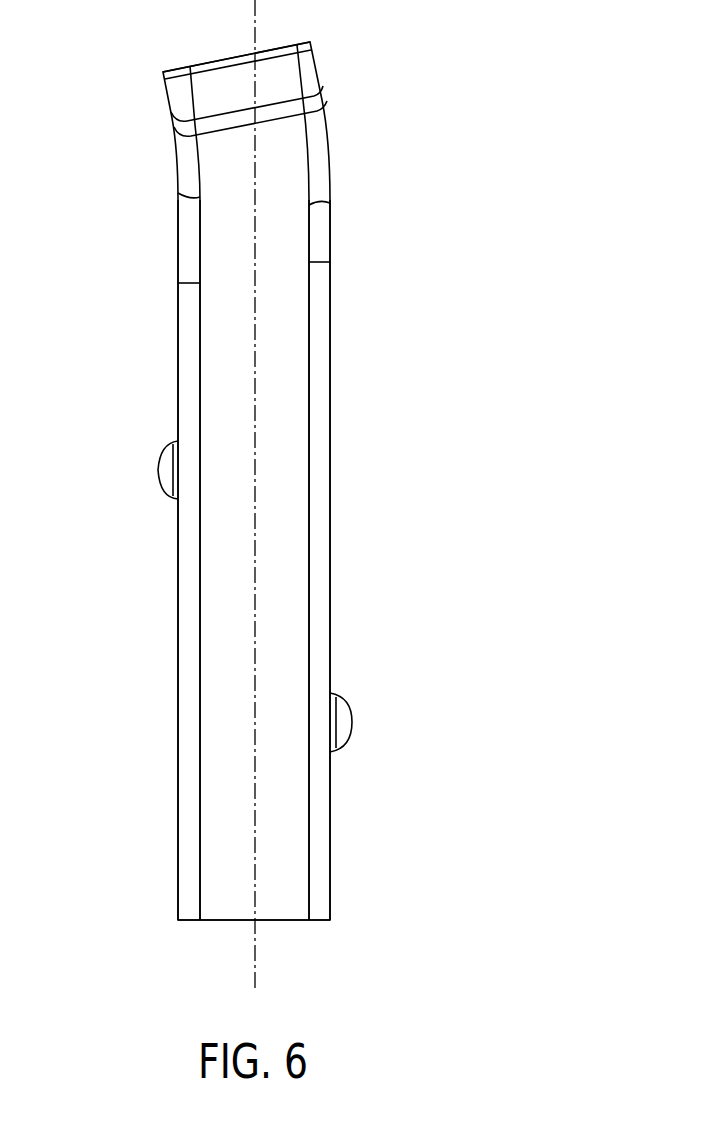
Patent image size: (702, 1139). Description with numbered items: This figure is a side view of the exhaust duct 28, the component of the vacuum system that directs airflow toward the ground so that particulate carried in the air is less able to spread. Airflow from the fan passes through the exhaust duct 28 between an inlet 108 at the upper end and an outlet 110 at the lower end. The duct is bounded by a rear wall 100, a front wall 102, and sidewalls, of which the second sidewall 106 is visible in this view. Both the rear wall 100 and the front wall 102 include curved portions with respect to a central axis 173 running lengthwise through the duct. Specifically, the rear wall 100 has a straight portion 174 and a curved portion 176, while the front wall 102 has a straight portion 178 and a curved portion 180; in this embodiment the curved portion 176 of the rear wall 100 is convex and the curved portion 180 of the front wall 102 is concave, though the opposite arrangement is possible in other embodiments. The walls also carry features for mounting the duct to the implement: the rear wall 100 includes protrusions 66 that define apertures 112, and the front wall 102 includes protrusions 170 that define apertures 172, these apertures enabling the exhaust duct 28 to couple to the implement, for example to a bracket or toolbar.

The exhaust duct 28 is at (482, 155).
The protrusions 66 is at (337, 736).
The rear wall 100 is at (330, 480).
The front wall 102 is at (178, 643).
The second sidewall 106 is at (220, 818).
The inlet 108 is at (227, 62).
The outlet 110 is at (235, 920).
The apertures 112 is at (352, 718).
The protrusions 170 is at (160, 492).
The apertures 172 is at (158, 470).
The central axis 173 is at (257, 212).
The straight portion 174 is at (330, 405).
The curved portion 176 is at (325, 110).
The straight portion 178 is at (178, 303).
The curved portion 180 is at (176, 145).